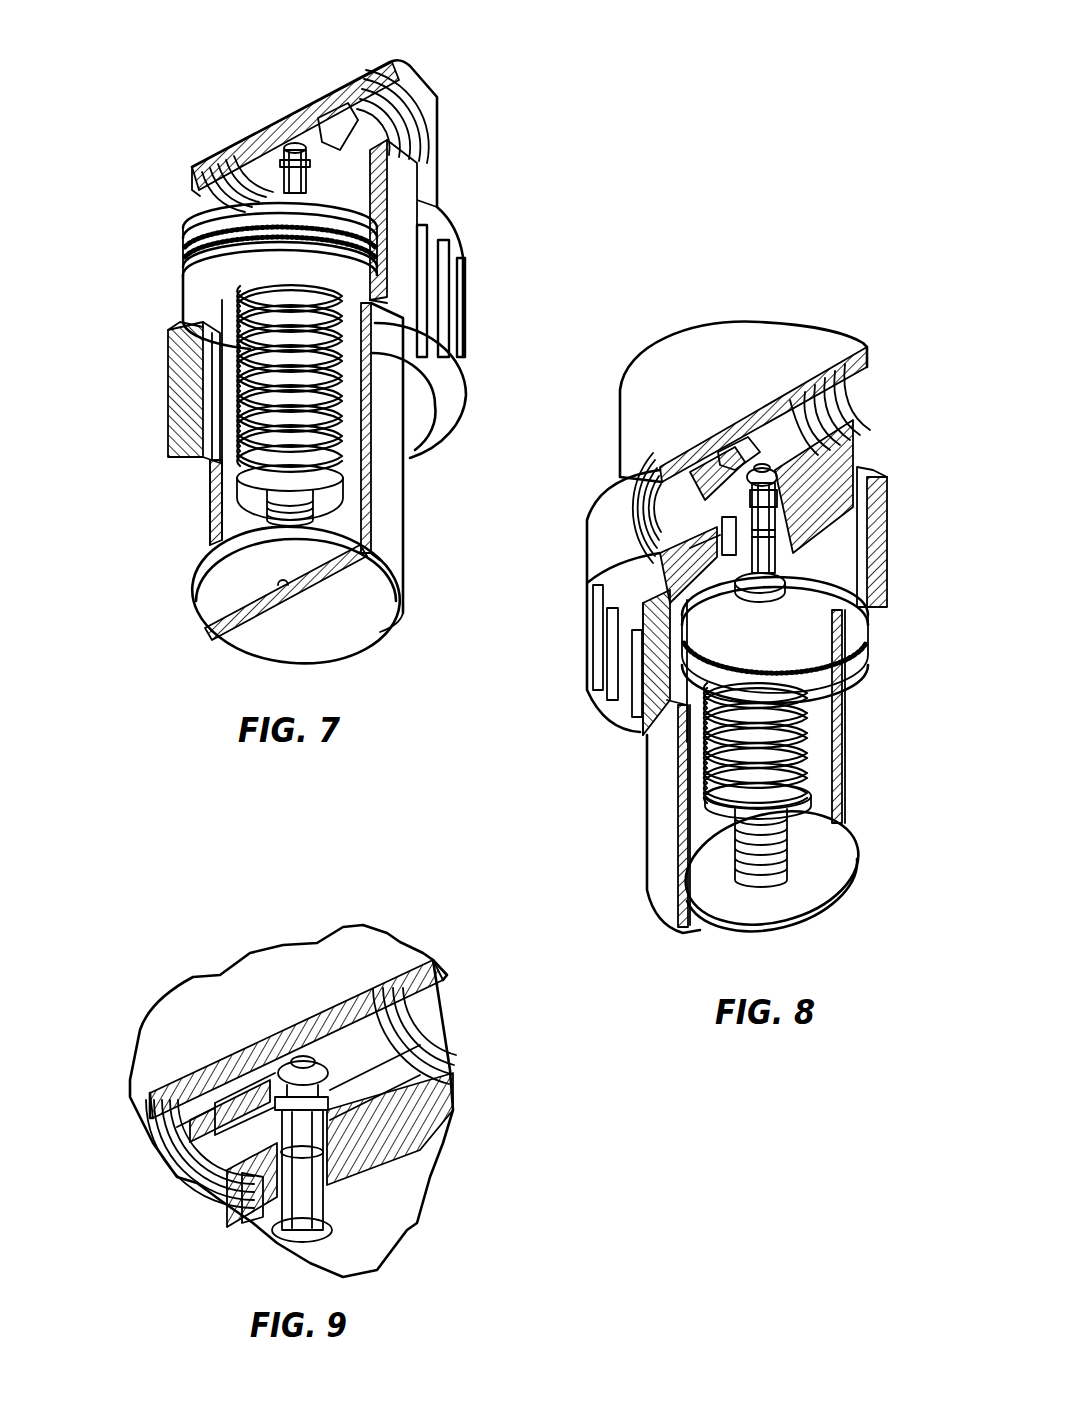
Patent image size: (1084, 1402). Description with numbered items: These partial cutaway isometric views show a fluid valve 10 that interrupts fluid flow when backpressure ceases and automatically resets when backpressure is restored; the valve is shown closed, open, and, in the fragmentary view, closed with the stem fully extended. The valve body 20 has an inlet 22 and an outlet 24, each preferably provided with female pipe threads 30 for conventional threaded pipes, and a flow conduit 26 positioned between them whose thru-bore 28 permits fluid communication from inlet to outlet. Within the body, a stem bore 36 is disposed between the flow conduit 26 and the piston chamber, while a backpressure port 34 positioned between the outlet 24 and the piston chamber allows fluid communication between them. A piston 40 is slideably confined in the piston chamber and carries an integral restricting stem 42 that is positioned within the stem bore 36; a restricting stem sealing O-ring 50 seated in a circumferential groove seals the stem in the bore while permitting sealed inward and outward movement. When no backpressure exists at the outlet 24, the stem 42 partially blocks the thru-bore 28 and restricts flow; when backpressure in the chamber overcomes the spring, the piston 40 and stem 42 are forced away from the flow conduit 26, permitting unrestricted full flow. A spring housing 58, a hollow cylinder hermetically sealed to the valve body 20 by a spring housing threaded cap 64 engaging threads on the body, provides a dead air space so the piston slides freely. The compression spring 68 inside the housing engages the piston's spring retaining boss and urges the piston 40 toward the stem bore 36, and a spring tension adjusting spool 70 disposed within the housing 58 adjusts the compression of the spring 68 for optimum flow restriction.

In FIG. 7, the fluid valve 10 is at (482, 190).
In FIG. 8, the fluid valve 10 is at (585, 730).
In FIG. 7, the valve body 20 is at (283, 105).
In FIG. 8, the valve body 20 is at (745, 330).
In FIG. 7, the inlet 22 is at (397, 82).
In FIG. 8, the inlet 22 is at (833, 397).
In FIG. 7, the outlet 24 is at (205, 185).
In FIG. 8, the outlet 24 is at (660, 553).
In FIG. 7, the flow conduit 26 is at (320, 112).
In FIG. 8, the flow conduit 26 is at (718, 452).
In FIG. 9, the flow conduit 26 is at (337, 1020).
In FIG. 7, the thru-bore 28 is at (258, 160).
In FIG. 8, the thru-bore 28 is at (860, 507).
In FIG. 9, the thru-bore 28 is at (397, 1082).
In FIG. 7, the female pipe threads 30 is at (432, 135).
In FIG. 8, the female pipe threads 30 is at (617, 477).
In FIG. 9, the female pipe threads 30 is at (443, 1067).
In FIG. 8, the backpressure port 34 is at (667, 570).
In FIG. 9, the backpressure port 34 is at (232, 1210).
In FIG. 8, the stem bore 36 is at (790, 400).
In FIG. 7, the piston 40 is at (218, 324).
In FIG. 8, the piston 40 is at (866, 636).
In FIG. 8, the restricting stem 42 is at (786, 575).
In FIG. 9, the restricting stem 42 is at (300, 1236).
In FIG. 8, the restricting stem sealing O-ring 50 is at (885, 515).
In FIG. 9, the restricting stem sealing O-ring 50 is at (343, 1150).
In FIG. 7, the spring housing 58 is at (256, 658).
In FIG. 8, the spring housing 58 is at (646, 853).
In FIG. 7, the spring housing threaded cap 64 is at (372, 357).
In FIG. 8, the spring housing threaded cap 64 is at (637, 606).
In FIG. 7, the compression spring 68 is at (232, 445).
In FIG. 8, the compression spring 68 is at (820, 757).
In FIG. 7, the spring tension adjusting spool 70 is at (194, 578).
In FIG. 8, the spring tension adjusting spool 70 is at (850, 905).